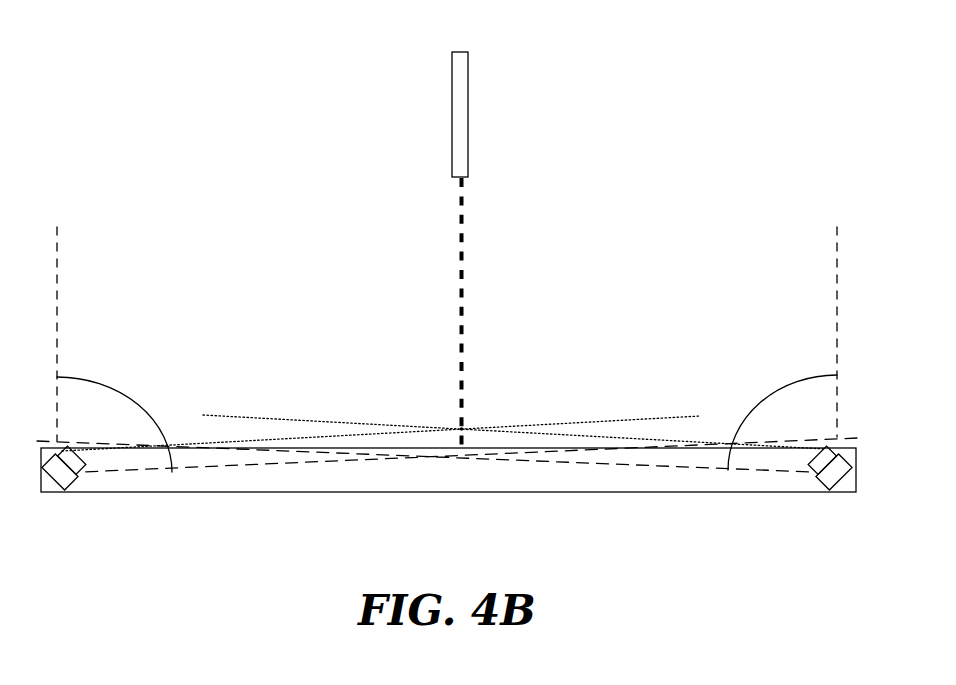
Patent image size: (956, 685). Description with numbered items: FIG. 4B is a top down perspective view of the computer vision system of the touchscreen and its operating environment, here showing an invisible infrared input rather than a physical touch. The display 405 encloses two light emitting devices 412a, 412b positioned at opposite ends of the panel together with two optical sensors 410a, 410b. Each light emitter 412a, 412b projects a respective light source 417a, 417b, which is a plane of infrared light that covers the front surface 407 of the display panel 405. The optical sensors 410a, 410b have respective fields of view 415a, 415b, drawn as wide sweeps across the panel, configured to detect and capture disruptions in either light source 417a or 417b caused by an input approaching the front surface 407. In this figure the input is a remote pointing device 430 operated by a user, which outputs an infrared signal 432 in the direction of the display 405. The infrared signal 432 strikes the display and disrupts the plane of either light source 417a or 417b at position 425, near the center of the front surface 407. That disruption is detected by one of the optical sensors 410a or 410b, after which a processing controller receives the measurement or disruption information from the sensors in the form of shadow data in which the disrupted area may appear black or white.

The display 405 is at (350, 494).
The optical sensor 410a is at (75, 491).
The optical sensor 410b is at (823, 493).
The light emitting device 412a is at (84, 468).
The light emitting device 412b is at (813, 468).
The field of view 415a is at (103, 380).
The field of view 415b is at (802, 376).
The light source 417a is at (266, 441).
The light source 417b is at (636, 441).
The position 425 is at (456, 422).
The front surface 407 is at (522, 434).
The remote pointing device 430 is at (452, 173).
The infrared signal 432 is at (460, 277).